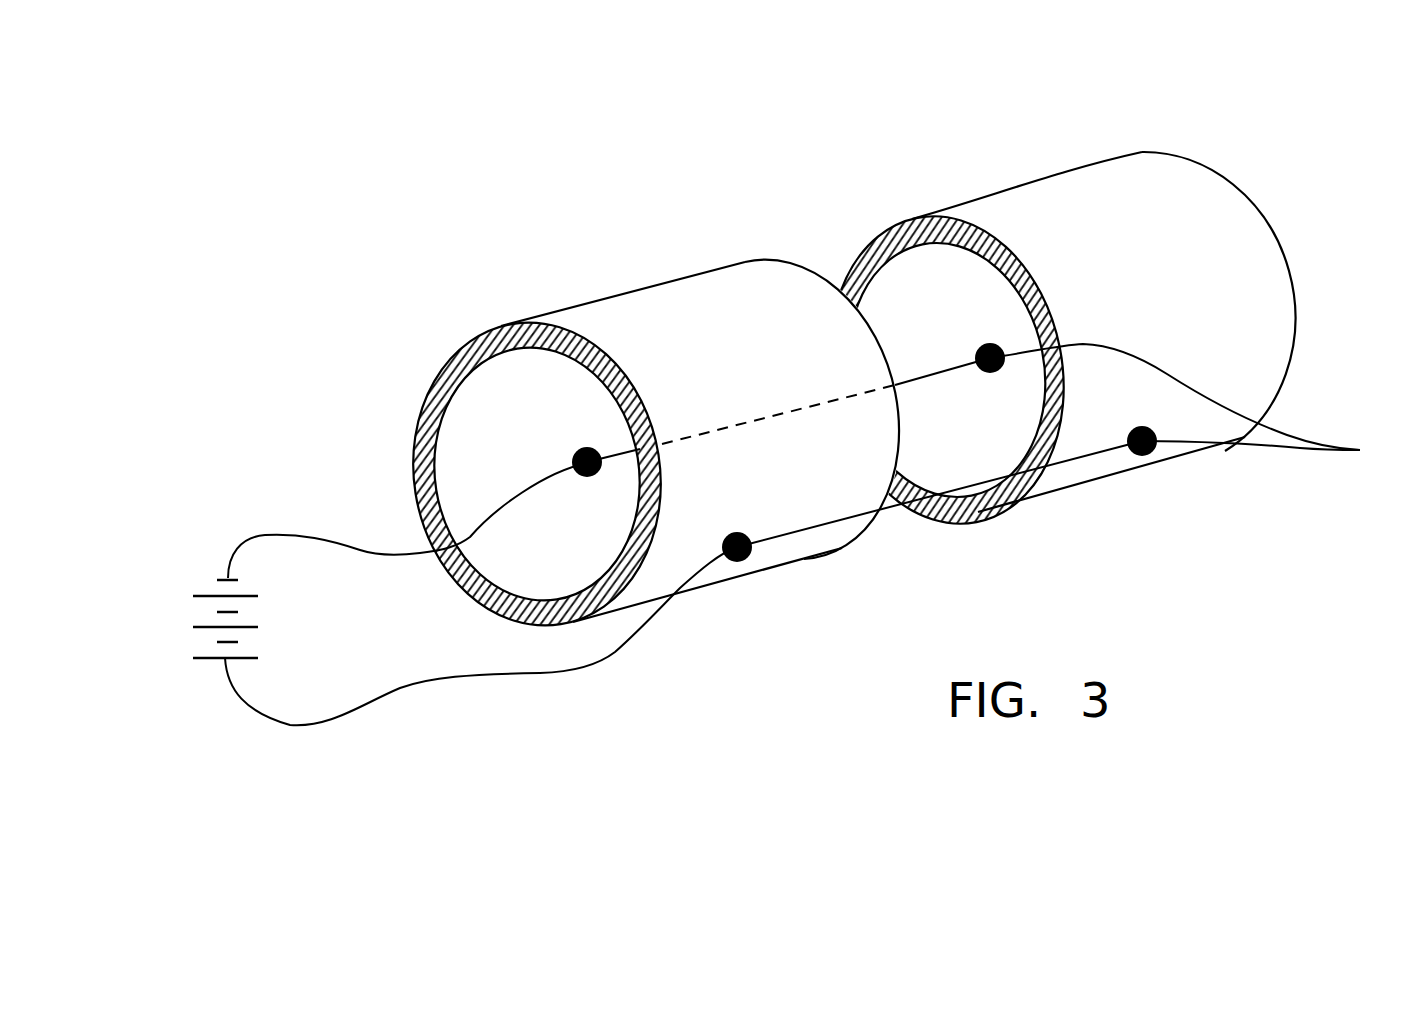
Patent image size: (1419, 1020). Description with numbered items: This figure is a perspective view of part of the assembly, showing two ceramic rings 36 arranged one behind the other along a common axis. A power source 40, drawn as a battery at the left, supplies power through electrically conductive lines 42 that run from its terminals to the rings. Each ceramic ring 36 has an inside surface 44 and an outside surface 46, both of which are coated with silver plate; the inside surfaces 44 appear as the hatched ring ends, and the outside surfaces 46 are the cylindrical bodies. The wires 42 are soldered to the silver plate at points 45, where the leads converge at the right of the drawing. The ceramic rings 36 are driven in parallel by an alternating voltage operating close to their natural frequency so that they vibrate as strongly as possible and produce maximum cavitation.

The ceramic ring 36 is at (820, 545).
The power source 40 is at (194, 574).
The electrically conductive line 42 is at (375, 550).
The inside surface 44 is at (485, 397).
The solder point 45 is at (1360, 450).
The outside surface 46 is at (668, 298).